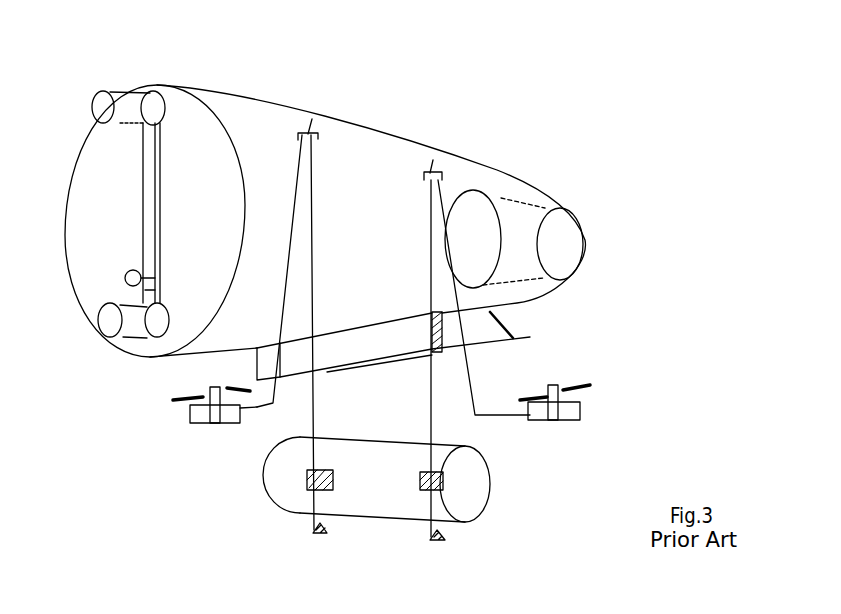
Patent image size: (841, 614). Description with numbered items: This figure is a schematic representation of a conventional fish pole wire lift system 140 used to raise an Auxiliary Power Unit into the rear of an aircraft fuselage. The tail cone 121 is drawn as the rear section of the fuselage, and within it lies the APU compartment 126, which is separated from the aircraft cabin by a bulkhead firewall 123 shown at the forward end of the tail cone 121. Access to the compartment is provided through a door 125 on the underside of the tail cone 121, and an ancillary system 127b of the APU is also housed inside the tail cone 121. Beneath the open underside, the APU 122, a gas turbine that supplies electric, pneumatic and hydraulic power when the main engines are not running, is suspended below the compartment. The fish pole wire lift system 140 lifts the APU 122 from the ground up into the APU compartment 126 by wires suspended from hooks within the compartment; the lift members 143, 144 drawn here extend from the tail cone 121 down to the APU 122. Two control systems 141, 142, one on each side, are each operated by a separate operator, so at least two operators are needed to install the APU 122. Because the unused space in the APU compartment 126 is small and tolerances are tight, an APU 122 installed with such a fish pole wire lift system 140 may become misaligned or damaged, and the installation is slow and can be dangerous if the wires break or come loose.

The tail cone 121 is at (257, 100).
The Auxiliary Power Unit (APU) 122 is at (380, 503).
The bulkhead firewall 123 is at (103, 183).
The door 125 is at (495, 325).
The APU compartment 126 is at (377, 160).
The ancillary system 127b is at (508, 213).
The fish pole wire lift system 140 is at (573, 428).
The control system 141 is at (580, 413).
The control system 142 is at (185, 412).
The right strut / pipe 143 is at (440, 418).
The left strut / pipe 144 is at (313, 413).